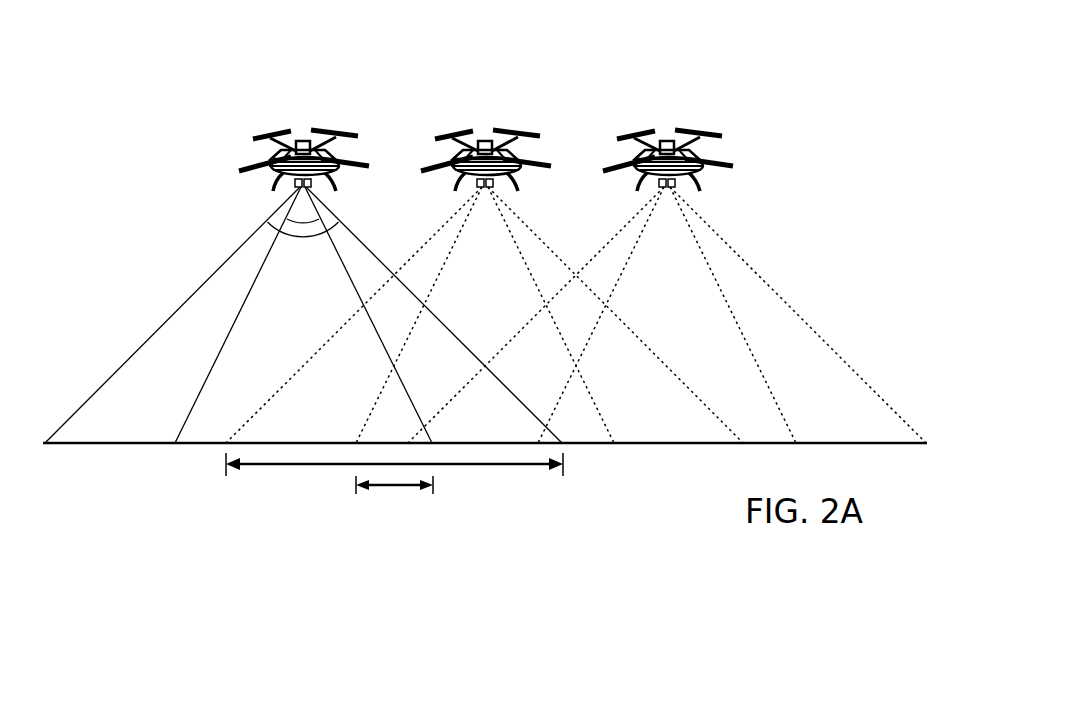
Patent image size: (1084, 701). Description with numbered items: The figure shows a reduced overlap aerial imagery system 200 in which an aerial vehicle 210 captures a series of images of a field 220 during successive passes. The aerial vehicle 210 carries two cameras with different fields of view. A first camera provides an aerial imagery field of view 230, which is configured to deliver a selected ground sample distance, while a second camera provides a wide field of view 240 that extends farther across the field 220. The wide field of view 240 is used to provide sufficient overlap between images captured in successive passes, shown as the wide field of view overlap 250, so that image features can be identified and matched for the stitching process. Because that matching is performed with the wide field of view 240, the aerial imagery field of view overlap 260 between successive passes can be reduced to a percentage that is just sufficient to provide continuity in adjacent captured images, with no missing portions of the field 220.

The reduced overlap aerial imagery system 200 is at (827, 36).
The aerial vehicle 210 is at (272, 133).
The field 220 is at (80, 443).
The aerial imagery field of view 230 is at (306, 221).
The wide field of view 240 is at (272, 226).
The wide field of view overlap 250 is at (252, 470).
The aerial imagery field of view overlap 260 is at (407, 498).